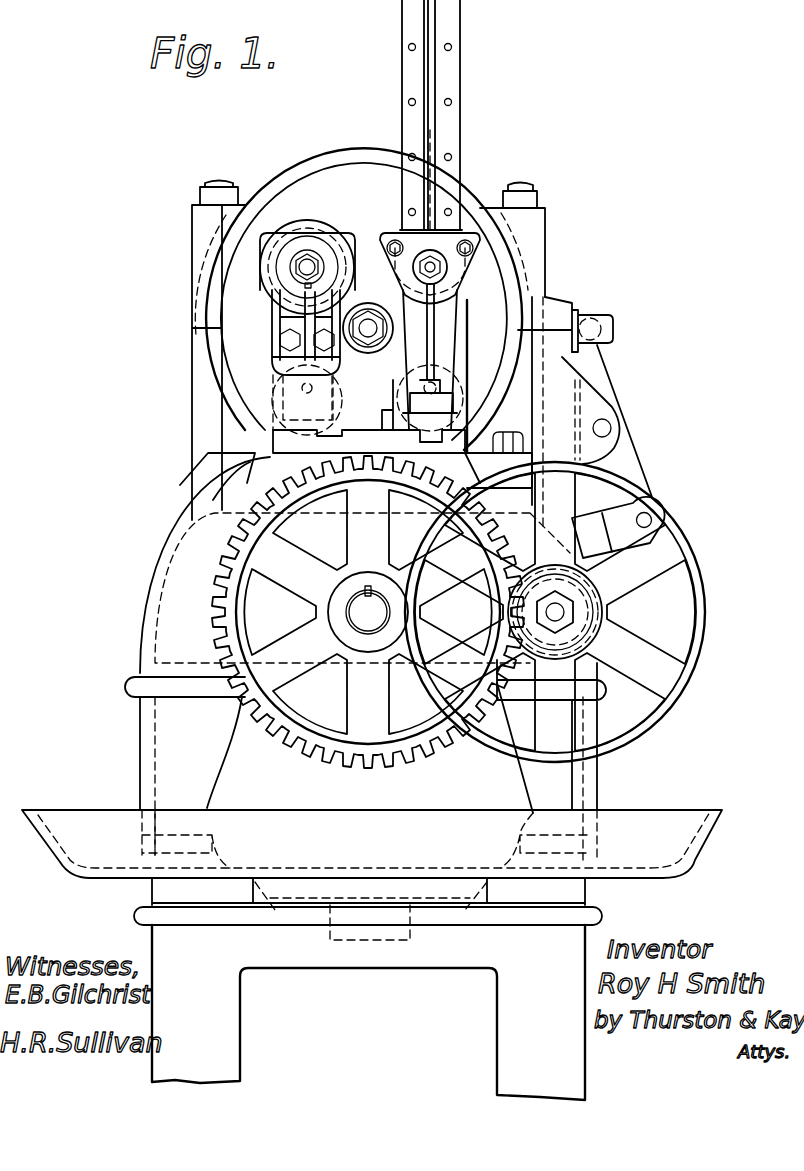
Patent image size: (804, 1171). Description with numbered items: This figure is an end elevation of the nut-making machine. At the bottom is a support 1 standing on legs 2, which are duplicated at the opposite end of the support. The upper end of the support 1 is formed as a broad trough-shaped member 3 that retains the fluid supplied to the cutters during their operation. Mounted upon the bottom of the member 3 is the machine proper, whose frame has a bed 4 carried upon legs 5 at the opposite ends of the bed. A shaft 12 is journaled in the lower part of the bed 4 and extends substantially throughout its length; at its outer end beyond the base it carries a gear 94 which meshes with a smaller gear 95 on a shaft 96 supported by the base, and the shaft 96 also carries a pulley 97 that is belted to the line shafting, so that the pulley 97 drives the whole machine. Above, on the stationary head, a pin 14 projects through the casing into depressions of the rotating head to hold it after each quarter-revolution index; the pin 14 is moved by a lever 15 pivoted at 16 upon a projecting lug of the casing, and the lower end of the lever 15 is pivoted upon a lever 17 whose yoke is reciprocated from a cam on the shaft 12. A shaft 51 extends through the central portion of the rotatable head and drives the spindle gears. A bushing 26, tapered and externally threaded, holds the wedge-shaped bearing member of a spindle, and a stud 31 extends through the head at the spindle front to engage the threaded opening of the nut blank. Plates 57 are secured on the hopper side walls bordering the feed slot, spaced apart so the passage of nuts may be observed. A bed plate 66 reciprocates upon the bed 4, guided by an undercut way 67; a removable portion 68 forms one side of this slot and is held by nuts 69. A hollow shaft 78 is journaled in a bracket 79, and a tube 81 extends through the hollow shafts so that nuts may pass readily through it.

The support 1 is at (598, 918).
The legs 2 is at (240, 1030).
The trough-shaped member 3 is at (712, 812).
The bed 4 is at (172, 547).
The legs 5 is at (433, 143).
The shaft 12 is at (368, 612).
The pin 14 is at (620, 312).
The lever 15 is at (617, 383).
The pivot 16 is at (612, 433).
The lever 17 is at (618, 527).
The bushing 26 is at (283, 388).
The stud 31 is at (478, 380).
The shaft 51 is at (368, 318).
The plates 57 is at (402, 64).
The bed plate 66 is at (369, 442).
The undercut way 67 is at (232, 470).
The removable portion 68 is at (499, 469).
The nuts 69 is at (510, 432).
The hollow shaft 78 is at (318, 260).
The bracket 79 is at (308, 240).
The tube 81 is at (295, 277).
The gear 94 is at (418, 752).
The gear 95 is at (580, 612).
The shaft 96 is at (565, 622).
The pulley 97 is at (695, 568).